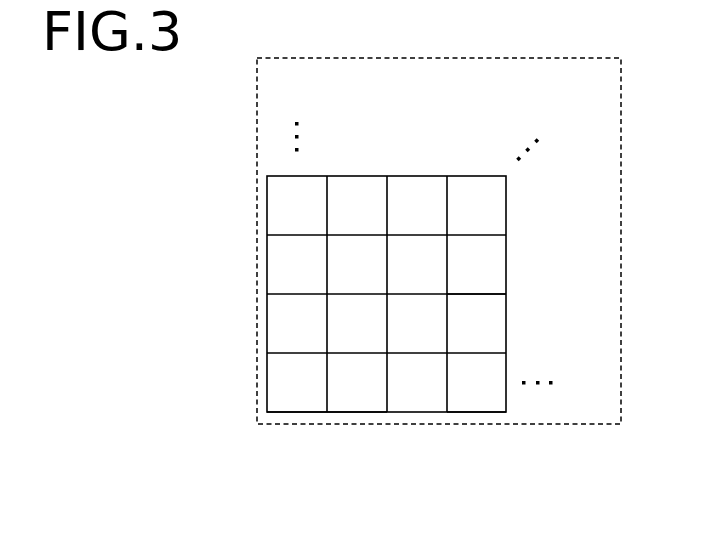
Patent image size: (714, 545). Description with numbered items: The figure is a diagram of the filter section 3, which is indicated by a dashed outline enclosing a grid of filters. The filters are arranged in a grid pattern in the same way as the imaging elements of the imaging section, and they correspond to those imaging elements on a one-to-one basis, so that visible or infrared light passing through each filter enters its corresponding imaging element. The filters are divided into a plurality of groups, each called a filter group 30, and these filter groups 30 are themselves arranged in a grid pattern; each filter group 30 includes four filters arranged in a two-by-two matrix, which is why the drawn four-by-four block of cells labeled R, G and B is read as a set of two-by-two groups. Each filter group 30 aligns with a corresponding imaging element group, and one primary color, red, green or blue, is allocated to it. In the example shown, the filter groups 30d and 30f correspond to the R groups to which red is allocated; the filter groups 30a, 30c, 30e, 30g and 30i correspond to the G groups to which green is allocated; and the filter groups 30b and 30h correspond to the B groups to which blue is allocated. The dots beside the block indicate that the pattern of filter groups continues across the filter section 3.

The filter section 3 is at (536, 57).
The filter group 30 is at (255, 436).
The filter group 30a is at (307, 400).
The filter group 30b is at (373, 400).
The filter group 30c is at (427, 400).
The filter group 30d is at (277, 307).
The filter group 30e is at (342, 343).
The filter group 30f is at (433, 345).
The filter group 30g is at (277, 243).
The filter group 30h is at (342, 280).
The filter group 30i is at (433, 282).